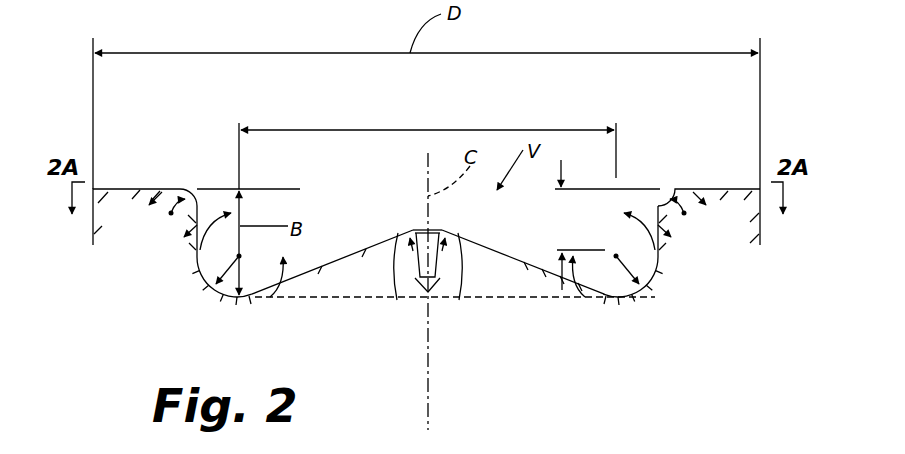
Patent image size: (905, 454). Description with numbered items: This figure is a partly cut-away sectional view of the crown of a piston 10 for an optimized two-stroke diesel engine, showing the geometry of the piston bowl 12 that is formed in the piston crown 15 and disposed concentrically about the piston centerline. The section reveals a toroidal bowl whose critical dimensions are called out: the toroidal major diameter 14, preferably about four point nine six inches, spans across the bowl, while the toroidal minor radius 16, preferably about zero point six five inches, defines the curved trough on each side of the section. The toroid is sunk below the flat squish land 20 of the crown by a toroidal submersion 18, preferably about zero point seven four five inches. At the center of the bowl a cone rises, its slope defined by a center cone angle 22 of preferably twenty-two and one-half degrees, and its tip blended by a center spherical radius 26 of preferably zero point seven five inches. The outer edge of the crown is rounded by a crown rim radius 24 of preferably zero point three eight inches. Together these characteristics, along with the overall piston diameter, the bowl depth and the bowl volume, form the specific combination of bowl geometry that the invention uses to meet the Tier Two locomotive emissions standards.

The piston 10 is at (682, 359).
The piston bowl 12 is at (351, 211).
The toroidal major diameter 14 is at (345, 130).
The piston crown 15 is at (643, 156).
The toroidal minor radius 16 is at (239, 256).
The toroidal submersion 18 is at (560, 223).
The squish land 20 is at (735, 190).
The center cone angle 22 is at (400, 265).
The crown rim radius 24 is at (171, 213).
The center spherical radius 26 is at (417, 278).